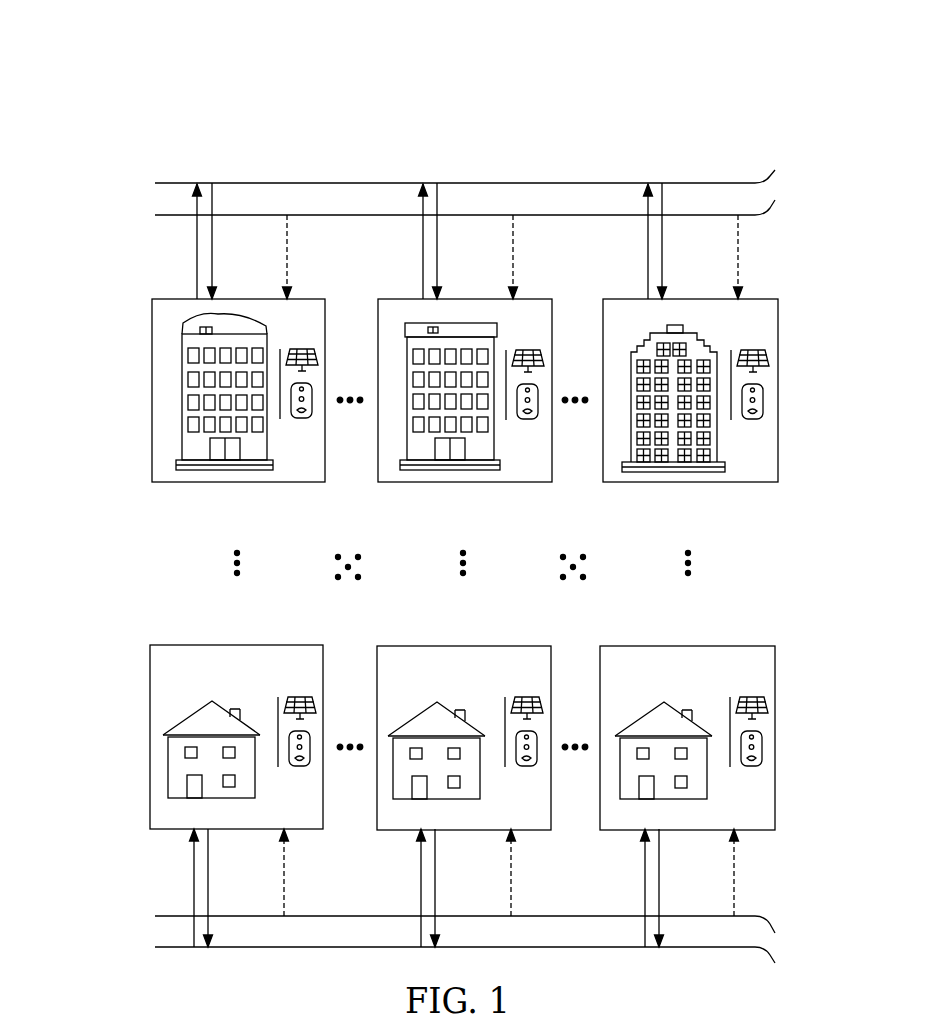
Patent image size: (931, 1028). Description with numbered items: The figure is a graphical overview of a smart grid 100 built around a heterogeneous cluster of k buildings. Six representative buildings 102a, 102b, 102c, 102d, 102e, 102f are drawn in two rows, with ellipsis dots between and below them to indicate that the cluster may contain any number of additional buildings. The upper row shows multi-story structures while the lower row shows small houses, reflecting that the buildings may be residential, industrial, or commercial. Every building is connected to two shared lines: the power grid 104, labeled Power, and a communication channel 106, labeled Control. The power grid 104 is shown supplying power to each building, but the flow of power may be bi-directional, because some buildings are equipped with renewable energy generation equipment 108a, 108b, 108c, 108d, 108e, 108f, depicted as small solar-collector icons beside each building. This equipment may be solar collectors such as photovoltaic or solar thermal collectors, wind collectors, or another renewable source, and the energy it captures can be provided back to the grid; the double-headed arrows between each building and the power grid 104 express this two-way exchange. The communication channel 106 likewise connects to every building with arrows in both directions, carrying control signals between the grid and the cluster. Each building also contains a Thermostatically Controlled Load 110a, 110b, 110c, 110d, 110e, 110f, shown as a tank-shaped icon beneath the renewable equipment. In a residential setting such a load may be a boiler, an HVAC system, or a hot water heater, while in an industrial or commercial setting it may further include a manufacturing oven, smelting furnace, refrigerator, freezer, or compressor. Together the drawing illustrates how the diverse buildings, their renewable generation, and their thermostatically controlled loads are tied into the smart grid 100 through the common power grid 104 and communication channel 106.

The smart grid 100 is at (643, 50).
The building 102a is at (182, 398).
The building 102b is at (458, 323).
The building 102c is at (683, 333).
The building 102d is at (168, 768).
The building 102e is at (425, 707).
The building 102f is at (652, 707).
The power grid 104 is at (450, 568).
The communication channel 106 is at (450, 569).
The renewable energy generation equipment 108a is at (302, 349).
The renewable energy generation equipment 108b is at (528, 350).
The renewable energy generation equipment 108c is at (753, 350).
The renewable energy generation equipment 108d is at (300, 697).
The renewable energy generation equipment 108e is at (527, 697).
The renewable energy generation equipment 108f is at (752, 697).
The Thermostatically Controlled Load 110a is at (301, 418).
The Thermostatically Controlled Load 110b is at (527, 419).
The Thermostatically Controlled Load 110c is at (752, 419).
The Thermostatically Controlled Load 110d is at (299, 766).
The Thermostatically Controlled Load 110e is at (526, 766).
The Thermostatically Controlled Load 110f is at (751, 766).